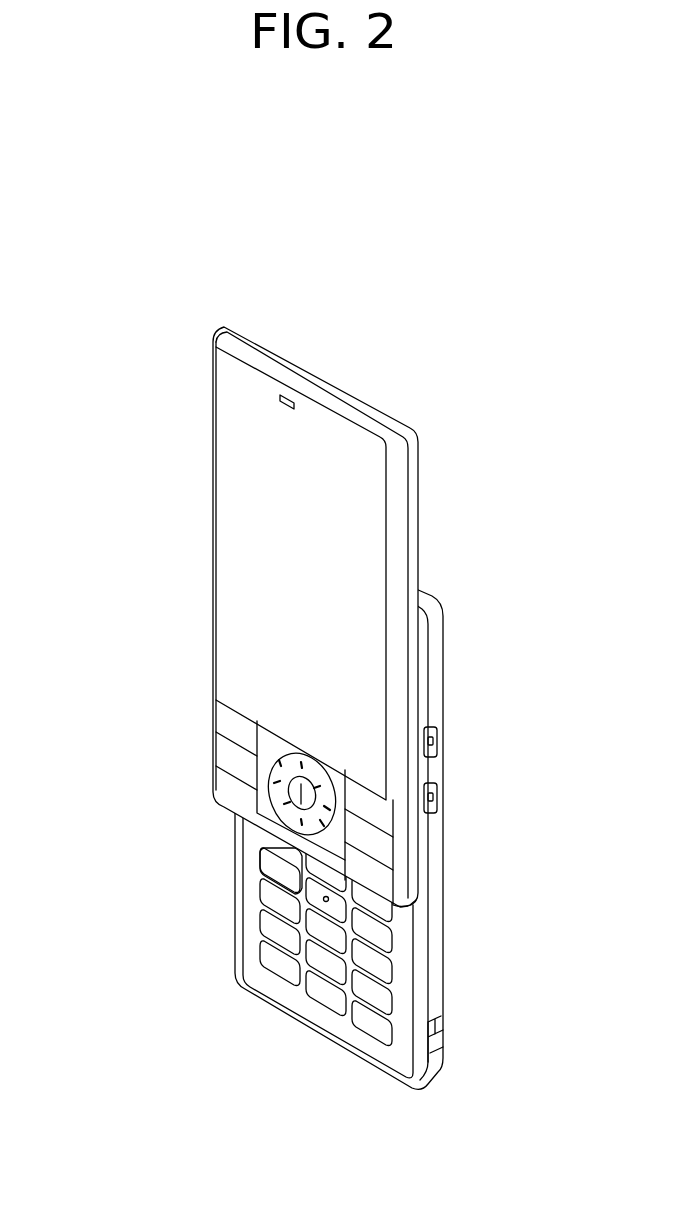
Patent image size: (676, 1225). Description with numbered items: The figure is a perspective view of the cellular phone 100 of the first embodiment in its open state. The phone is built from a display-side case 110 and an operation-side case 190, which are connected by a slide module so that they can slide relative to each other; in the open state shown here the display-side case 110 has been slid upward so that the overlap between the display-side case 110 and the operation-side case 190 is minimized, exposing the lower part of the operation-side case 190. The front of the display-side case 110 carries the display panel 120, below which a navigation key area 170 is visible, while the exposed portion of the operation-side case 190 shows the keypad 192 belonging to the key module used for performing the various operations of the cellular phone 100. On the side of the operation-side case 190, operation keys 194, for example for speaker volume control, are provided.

The cellular phone 100 is at (63, 306).
The display-side case 110 is at (230, 326).
The display unit 120 is at (235, 485).
The user input unit (navigation keypad) 170 is at (235, 758).
The operation-side case 190 is at (443, 645).
The keypad 192 is at (250, 897).
The operation keys 194 is at (438, 727).